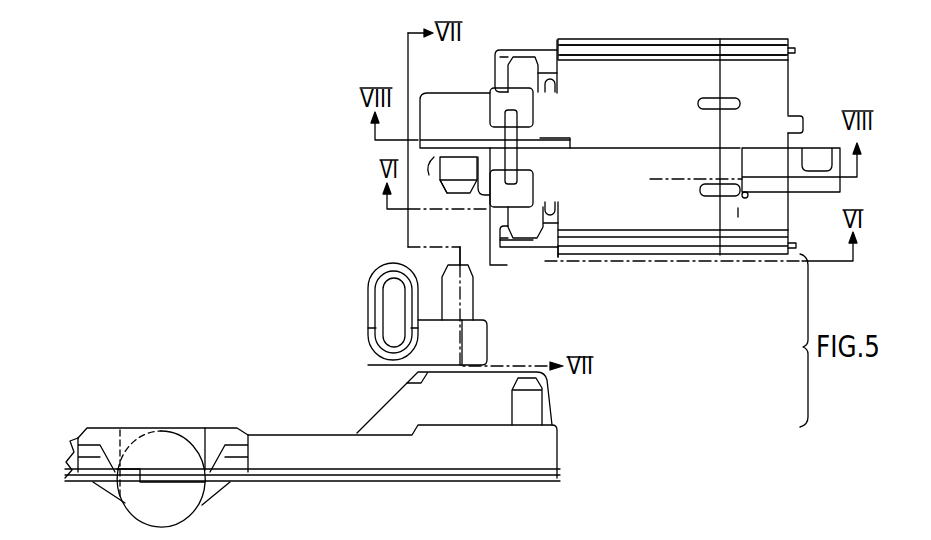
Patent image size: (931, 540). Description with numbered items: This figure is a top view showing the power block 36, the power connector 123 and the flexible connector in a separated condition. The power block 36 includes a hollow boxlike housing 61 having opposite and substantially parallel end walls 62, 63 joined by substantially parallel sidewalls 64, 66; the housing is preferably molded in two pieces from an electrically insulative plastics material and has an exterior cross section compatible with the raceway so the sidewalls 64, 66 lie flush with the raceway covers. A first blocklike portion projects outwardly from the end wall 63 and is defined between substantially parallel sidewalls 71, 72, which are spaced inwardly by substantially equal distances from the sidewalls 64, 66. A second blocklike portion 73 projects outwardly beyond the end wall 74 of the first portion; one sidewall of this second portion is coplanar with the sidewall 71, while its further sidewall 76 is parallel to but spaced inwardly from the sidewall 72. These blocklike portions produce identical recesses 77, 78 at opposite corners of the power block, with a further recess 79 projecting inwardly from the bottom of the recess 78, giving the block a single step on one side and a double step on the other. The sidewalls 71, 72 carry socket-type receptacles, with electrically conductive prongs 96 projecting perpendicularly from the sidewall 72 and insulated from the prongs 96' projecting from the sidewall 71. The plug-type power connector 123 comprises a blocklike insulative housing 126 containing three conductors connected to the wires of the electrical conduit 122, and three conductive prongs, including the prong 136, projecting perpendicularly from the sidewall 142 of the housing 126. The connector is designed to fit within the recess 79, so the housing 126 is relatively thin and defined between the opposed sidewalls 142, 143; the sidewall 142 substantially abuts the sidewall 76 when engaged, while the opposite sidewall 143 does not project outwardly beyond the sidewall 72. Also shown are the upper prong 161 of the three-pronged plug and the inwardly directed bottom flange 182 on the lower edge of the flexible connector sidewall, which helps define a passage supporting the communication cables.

The power block 36 is at (604, 30).
The sidewall 64 is at (678, 39).
The housing 61 is at (780, 25).
The end wall 62 is at (790, 73).
The recess 77 is at (553, 45).
The prong 96' is at (499, 116).
The sidewall 71 is at (553, 87).
The second blocklike portion 73 is at (445, 98).
The prong 96 is at (526, 194).
The sidewall 72 is at (560, 211).
The sidewall 76 is at (445, 177).
The recess 79 is at (438, 197).
The end wall 74 is at (485, 195).
The sidewall 142 is at (452, 312).
The prong 136 is at (472, 290).
The electrical conduit 122 is at (390, 298).
The power connector 123 is at (500, 331).
The housing 126 is at (478, 348).
The recess 78 is at (538, 258).
The end wall 63 is at (557, 253).
The sidewall 66 is at (670, 258).
The sidewall 143 is at (407, 380).
The bottom flange 182 is at (390, 413).
The prong 161 is at (530, 405).